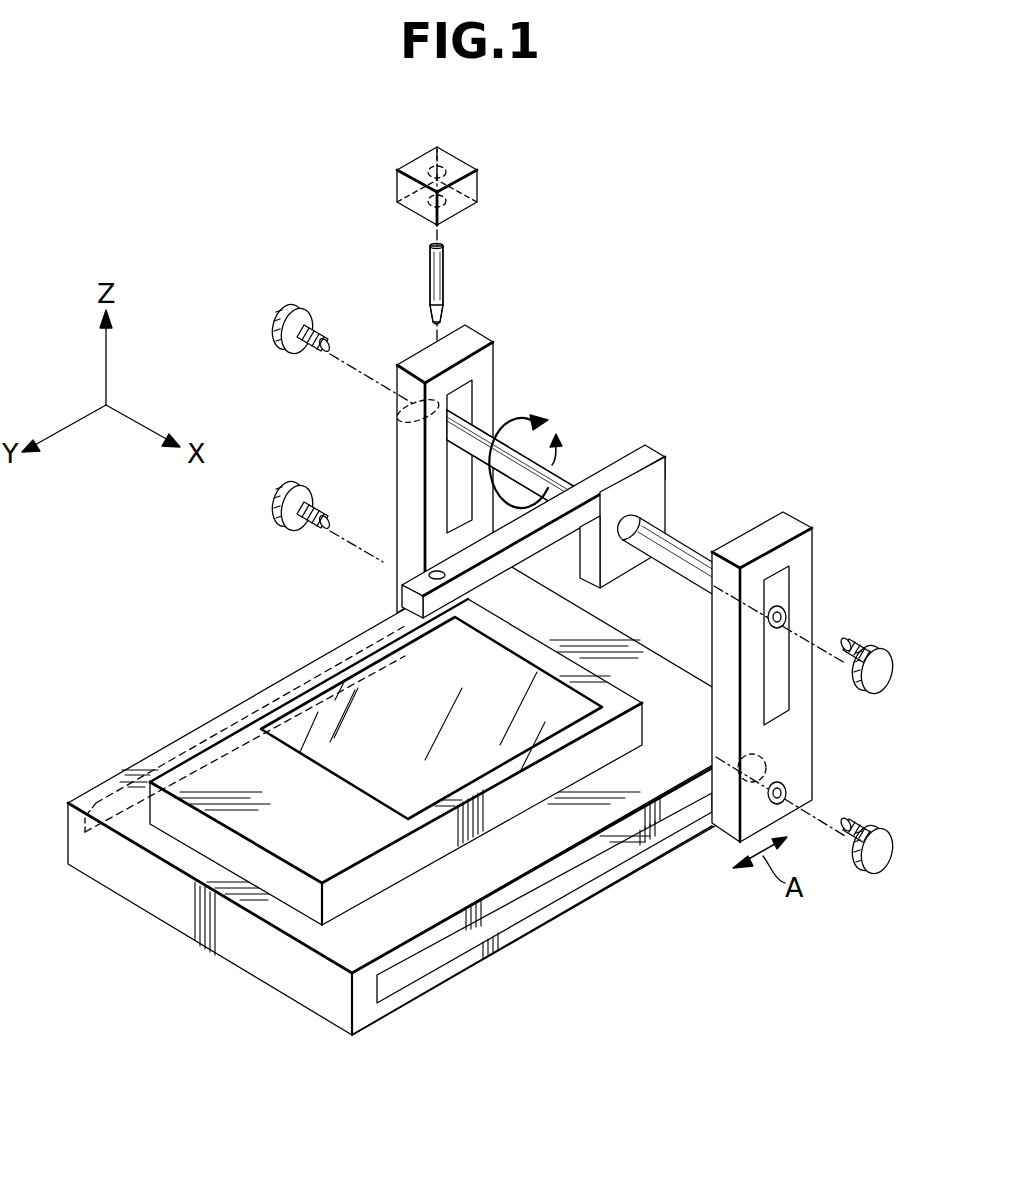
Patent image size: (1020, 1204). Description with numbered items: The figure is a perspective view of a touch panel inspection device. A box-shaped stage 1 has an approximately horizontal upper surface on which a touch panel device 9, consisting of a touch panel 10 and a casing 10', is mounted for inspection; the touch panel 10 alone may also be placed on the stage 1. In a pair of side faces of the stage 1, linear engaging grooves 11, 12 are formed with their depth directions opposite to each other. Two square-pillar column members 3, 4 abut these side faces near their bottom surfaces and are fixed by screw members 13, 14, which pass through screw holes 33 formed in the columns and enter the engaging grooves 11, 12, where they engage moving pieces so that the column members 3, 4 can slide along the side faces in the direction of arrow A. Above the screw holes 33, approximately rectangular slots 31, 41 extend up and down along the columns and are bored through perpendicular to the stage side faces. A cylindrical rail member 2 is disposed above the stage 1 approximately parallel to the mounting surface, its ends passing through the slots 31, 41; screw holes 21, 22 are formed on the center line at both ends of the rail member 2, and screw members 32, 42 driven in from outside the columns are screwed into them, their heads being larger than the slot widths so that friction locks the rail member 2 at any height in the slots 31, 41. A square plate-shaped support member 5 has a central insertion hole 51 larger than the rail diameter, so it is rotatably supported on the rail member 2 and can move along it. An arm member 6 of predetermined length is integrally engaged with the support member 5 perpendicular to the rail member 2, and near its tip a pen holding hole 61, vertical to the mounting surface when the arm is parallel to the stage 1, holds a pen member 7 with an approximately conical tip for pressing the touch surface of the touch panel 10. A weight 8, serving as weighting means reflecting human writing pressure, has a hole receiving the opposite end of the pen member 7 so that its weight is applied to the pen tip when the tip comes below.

The stage 1 is at (176, 902).
The rail member 2 is at (684, 572).
The column member 3 is at (808, 547).
The column member 4 is at (418, 360).
The support member 5 is at (657, 492).
The arm member 6 is at (627, 460).
The pen member 7 is at (444, 260).
The weight 8 is at (450, 163).
The touch panel device 9 is at (610, 903).
The touch panel 10 is at (437, 777).
The casing 10' is at (530, 923).
The engaging groove 11 is at (400, 978).
The engaging groove 12 is at (117, 800).
The screw member 13 is at (874, 874).
The screw member 14 is at (291, 485).
The screw hole 21 is at (787, 610).
The screw hole 22 is at (400, 414).
The slot 31 is at (780, 690).
The screw member 32 is at (873, 694).
The screw hole 33 is at (787, 791).
The slot 41 is at (470, 398).
The screw member 42 is at (278, 325).
The insertion hole 51 is at (653, 533).
The pen holding hole 61 is at (402, 586).